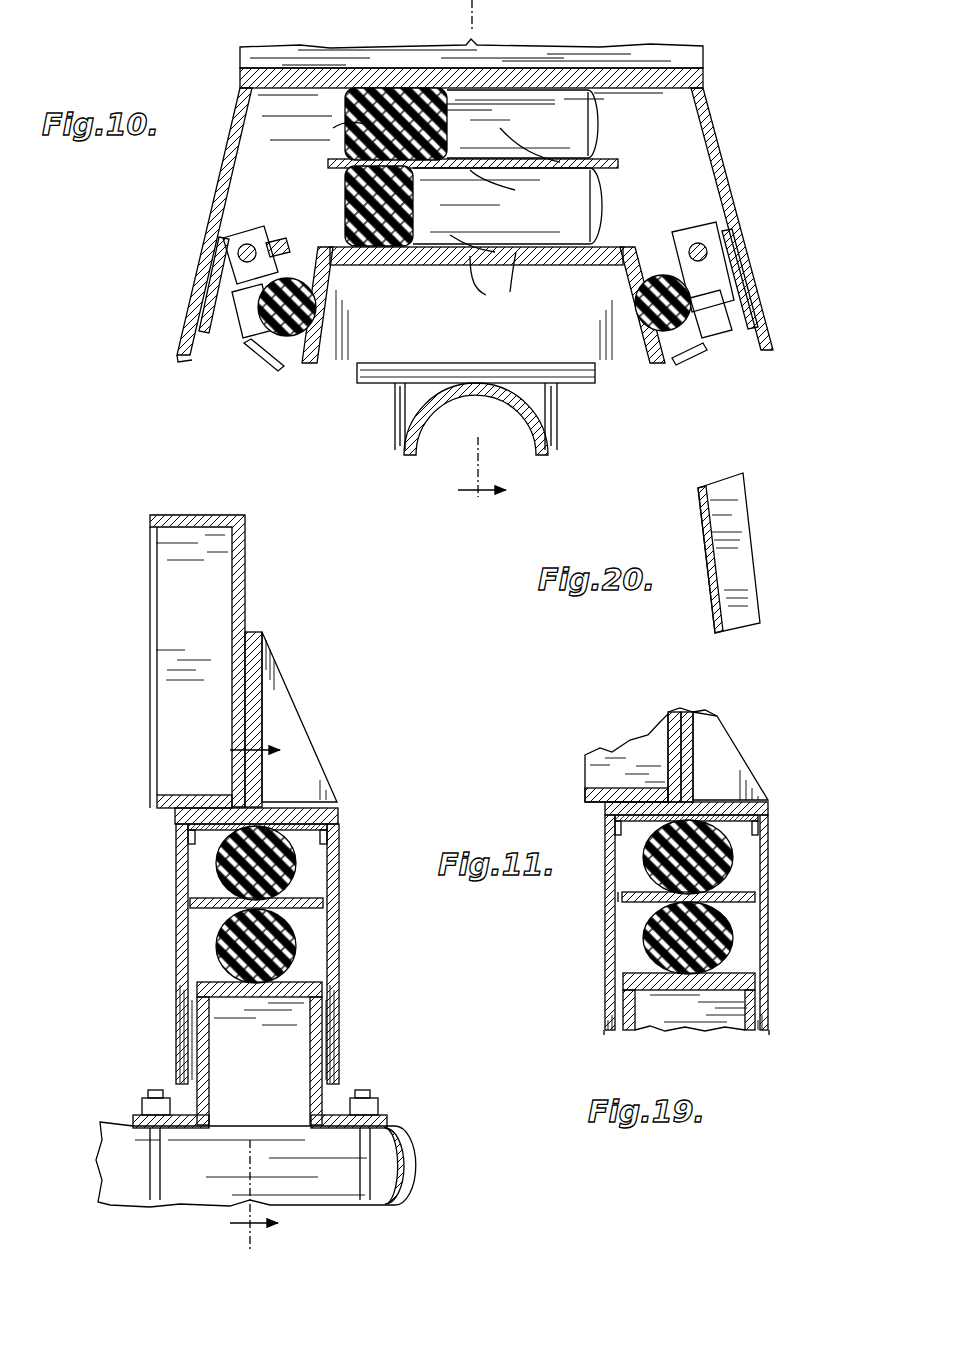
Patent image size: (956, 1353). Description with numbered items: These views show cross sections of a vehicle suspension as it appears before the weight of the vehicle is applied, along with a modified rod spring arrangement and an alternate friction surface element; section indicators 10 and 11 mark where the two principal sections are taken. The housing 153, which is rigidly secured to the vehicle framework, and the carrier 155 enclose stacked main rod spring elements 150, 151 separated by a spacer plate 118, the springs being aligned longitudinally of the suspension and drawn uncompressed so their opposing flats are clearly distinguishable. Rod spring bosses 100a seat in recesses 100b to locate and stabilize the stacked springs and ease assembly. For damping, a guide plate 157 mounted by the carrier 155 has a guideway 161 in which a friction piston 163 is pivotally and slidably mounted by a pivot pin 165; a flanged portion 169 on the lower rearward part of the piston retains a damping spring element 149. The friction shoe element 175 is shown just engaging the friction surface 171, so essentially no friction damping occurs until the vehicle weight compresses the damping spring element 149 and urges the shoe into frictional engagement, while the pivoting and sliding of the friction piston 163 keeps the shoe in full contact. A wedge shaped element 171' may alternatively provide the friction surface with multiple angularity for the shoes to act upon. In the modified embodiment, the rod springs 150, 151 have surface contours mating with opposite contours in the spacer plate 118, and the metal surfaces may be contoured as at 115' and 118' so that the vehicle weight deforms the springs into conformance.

In FIG. 10, the housing 153 is at (576, 84).
In FIG. 11, the housing 153 is at (306, 800).
In FIG. 19, the housing 153 is at (722, 800).
In FIG. 10, the rod spring element 150 is at (594, 124).
In FIG. 11, the rod spring element 150 is at (275, 860).
In FIG. 19, the rod spring element 150 is at (718, 860).
In FIG. 10, the rod spring element 151 is at (596, 196).
In FIG. 11, the rod spring element 151 is at (282, 946).
In FIG. 19, the rod spring element 151 is at (730, 938).
In FIG. 10, the spacer plate 118 is at (505, 166).
In FIG. 11, the spacer plate 118 is at (288, 902).
In FIG. 19, the spacer plate 118 is at (731, 887).
In FIG. 10, the carrier 155 is at (578, 263).
In FIG. 11, the carrier 155 is at (300, 1000).
In FIG. 19, the carrier 155 is at (730, 1018).
In FIG. 10, the damping spring element 149 is at (312, 308).
In FIG. 10, the guide plate 157 is at (258, 240).
In FIG. 10, the guideway 161 is at (288, 245).
In FIG. 10, the friction piston 163 is at (245, 336).
In FIG. 10, the pivot pin 165 is at (234, 246).
In FIG. 10, the flanged portion 169 is at (280, 370).
In FIG. 10, the friction surface 171 is at (450, 232).
In FIG. 10, the friction shoe element 175 is at (205, 288).
In FIG. 10, the rod spring boss 100a is at (524, 262).
In FIG. 10, the recess 100b is at (490, 270).
In FIG. 20, the wedge shaped element 171' is at (762, 553).
In FIG. 19, the contoured spacer plate surface 118' is at (595, 899).
In FIG. 19, the contoured housing surface 115' is at (715, 995).
In FIG. 11, the section line 10- 10 is at (259, 989).
In FIG. 10, the section line 11- 11 is at (473, 479).